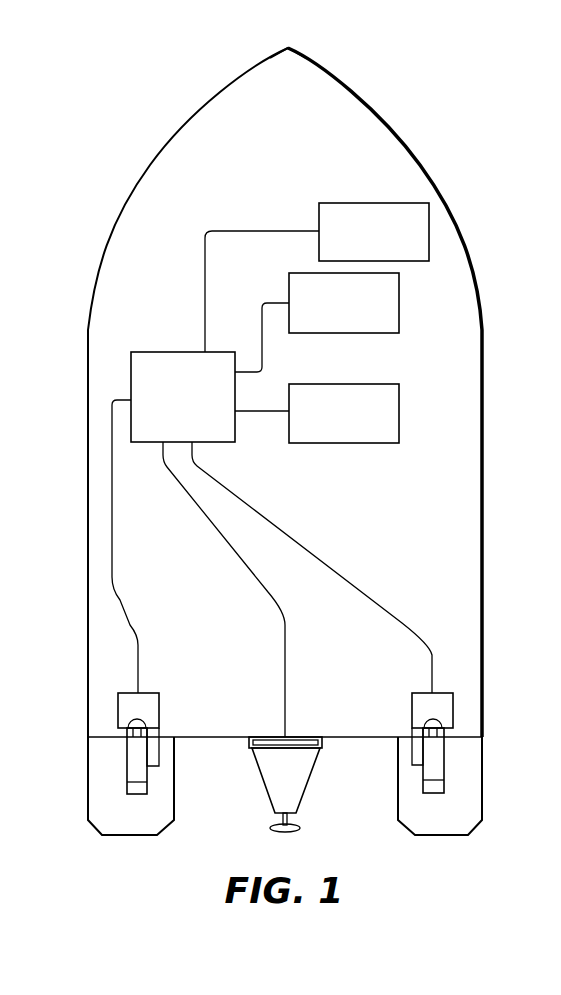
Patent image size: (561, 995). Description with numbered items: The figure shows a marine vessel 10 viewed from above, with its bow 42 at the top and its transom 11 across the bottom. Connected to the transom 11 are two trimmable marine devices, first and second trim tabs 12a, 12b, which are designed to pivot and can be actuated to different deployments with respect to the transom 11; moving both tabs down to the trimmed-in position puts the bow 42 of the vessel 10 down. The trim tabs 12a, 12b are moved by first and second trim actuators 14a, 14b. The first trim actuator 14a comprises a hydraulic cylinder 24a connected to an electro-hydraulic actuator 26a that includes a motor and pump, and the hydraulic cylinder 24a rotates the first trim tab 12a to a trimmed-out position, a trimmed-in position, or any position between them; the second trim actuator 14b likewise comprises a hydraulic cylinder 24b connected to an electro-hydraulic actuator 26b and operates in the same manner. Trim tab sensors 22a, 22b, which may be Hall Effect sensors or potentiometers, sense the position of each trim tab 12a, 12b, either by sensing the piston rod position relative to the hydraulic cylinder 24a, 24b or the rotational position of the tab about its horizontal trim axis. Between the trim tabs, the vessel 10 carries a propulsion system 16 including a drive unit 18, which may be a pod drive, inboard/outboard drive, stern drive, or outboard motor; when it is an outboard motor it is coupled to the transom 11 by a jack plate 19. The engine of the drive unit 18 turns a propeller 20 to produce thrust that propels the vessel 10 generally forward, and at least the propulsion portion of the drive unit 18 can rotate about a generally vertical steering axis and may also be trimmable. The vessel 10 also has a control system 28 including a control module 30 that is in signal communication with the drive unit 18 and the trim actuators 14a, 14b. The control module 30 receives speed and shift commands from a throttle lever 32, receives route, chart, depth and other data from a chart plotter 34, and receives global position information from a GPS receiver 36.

The marine vessel 10 is at (485, 317).
The transom 11 is at (203, 752).
The first trim tab 12a is at (127, 837).
The second trim tab 12b is at (440, 837).
The first trim actuator 14a is at (112, 709).
The second trim actuator 14b is at (458, 708).
The propulsion system 16 is at (318, 727).
The drive unit 18 is at (295, 788).
The jack plate 19 is at (270, 742).
The propeller 20 is at (273, 830).
The first trim tab sensor 22a is at (157, 752).
The second trim tab sensor 22b is at (418, 748).
The hydraulic cylinder 24a is at (133, 773).
The hydraulic cylinder 24b is at (437, 762).
The electro-hydraulic actuator 26a is at (165, 708).
The electro-hydraulic actuator 26b is at (410, 705).
The control system 28 is at (150, 330).
The control module 30 is at (227, 442).
The throttle lever 32 is at (349, 203).
The chart plotter 34 is at (399, 310).
The global positioning system (GPS) receiver 36 is at (399, 408).
The bow 42 is at (288, 48).